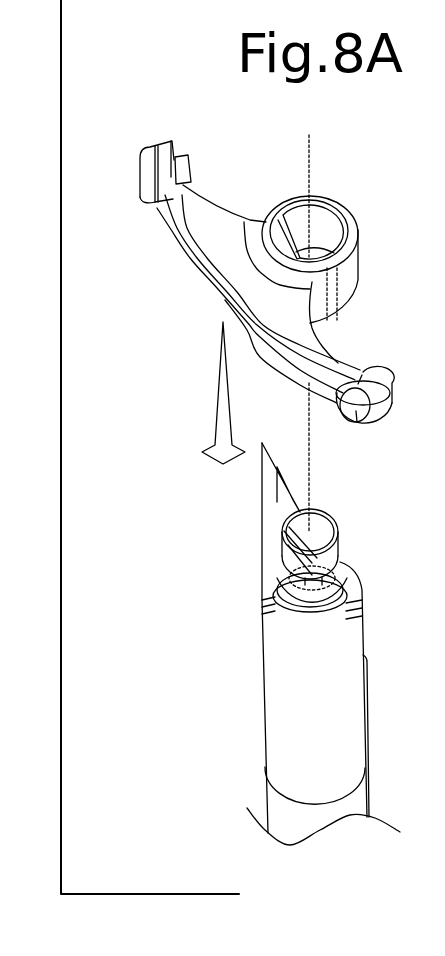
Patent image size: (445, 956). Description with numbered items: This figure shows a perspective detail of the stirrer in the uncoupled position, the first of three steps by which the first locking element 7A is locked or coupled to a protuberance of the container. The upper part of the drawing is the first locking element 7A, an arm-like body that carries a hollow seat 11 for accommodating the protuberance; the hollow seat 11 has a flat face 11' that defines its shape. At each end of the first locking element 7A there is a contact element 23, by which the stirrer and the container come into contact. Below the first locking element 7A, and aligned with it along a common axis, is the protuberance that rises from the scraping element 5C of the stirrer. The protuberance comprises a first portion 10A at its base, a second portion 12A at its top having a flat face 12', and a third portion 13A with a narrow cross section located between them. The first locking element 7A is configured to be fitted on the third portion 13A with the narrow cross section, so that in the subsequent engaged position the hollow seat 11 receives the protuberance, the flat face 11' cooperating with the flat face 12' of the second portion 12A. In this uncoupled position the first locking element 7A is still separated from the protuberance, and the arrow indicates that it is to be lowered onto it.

The first locking element 7A is at (207, 237).
The contact element 23 is at (140, 167).
The hollow seat 11 is at (337, 207).
The flat face 11' is at (284, 193).
The second portion 12A is at (332, 533).
The flat face 12' is at (266, 529).
The third portion 13A is at (297, 576).
The first portion 10A is at (295, 618).
The scraping element 5C is at (295, 735).